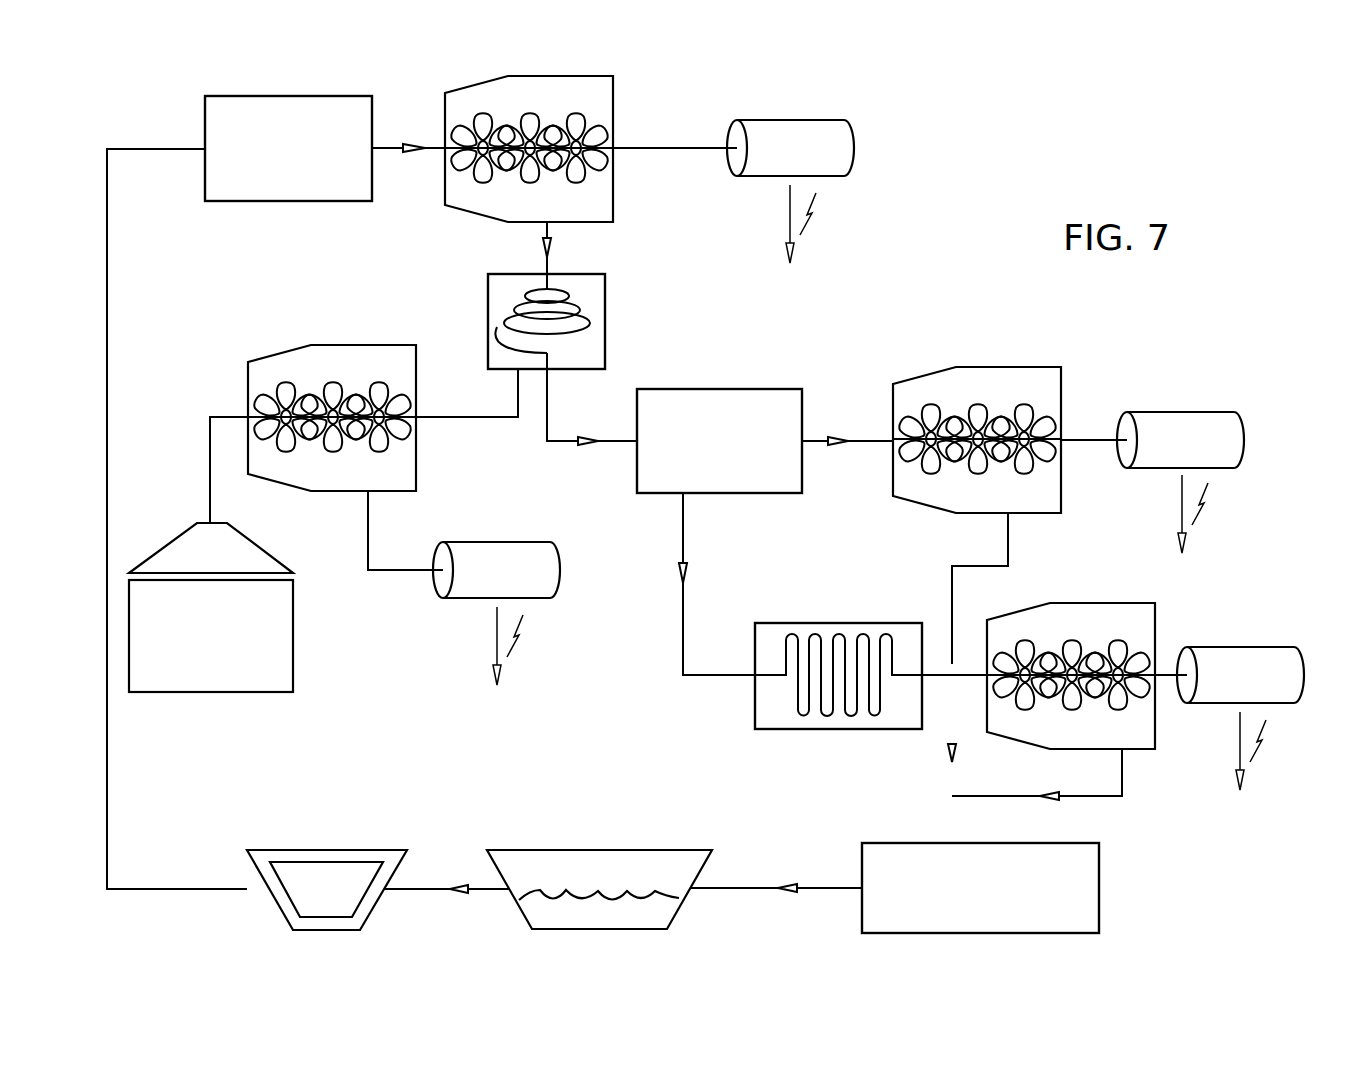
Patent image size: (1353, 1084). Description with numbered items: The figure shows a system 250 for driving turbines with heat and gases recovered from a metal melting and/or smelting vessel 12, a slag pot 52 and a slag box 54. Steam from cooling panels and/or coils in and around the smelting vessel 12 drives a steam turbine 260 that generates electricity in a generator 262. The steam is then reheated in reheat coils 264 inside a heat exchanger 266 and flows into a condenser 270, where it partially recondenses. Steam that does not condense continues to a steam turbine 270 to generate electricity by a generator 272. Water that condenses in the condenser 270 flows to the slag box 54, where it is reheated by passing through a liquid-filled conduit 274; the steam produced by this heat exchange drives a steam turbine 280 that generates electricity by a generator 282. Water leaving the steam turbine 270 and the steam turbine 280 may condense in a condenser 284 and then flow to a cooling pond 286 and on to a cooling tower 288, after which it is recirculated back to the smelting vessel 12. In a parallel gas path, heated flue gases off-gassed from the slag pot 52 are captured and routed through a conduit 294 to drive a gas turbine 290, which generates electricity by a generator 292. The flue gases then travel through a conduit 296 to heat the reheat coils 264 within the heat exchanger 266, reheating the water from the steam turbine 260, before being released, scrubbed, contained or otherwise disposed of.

The system 250 is at (945, 183).
The smelting vessel 12 is at (305, 158).
The slag pot 52 is at (227, 647).
The slag box 54 is at (915, 712).
The steam turbine 260 is at (603, 222).
The generator 262 is at (810, 119).
The reheat coils 264 is at (540, 290).
The heat exchanger 266 is at (585, 370).
The condenser and steam turbine 270 is at (762, 389).
The generator 272 is at (1200, 412).
The liquid-filled conduit 274 is at (837, 632).
The steam turbine 280 is at (1102, 603).
The generator 282 is at (1260, 647).
The condenser 284 is at (1056, 843).
The cooling pond 286 is at (618, 926).
The cooling tower 288 is at (368, 850).
The gas turbine 290 is at (366, 345).
The generator 292 is at (514, 542).
The conduit 294 is at (224, 417).
The conduit 296 is at (475, 419).